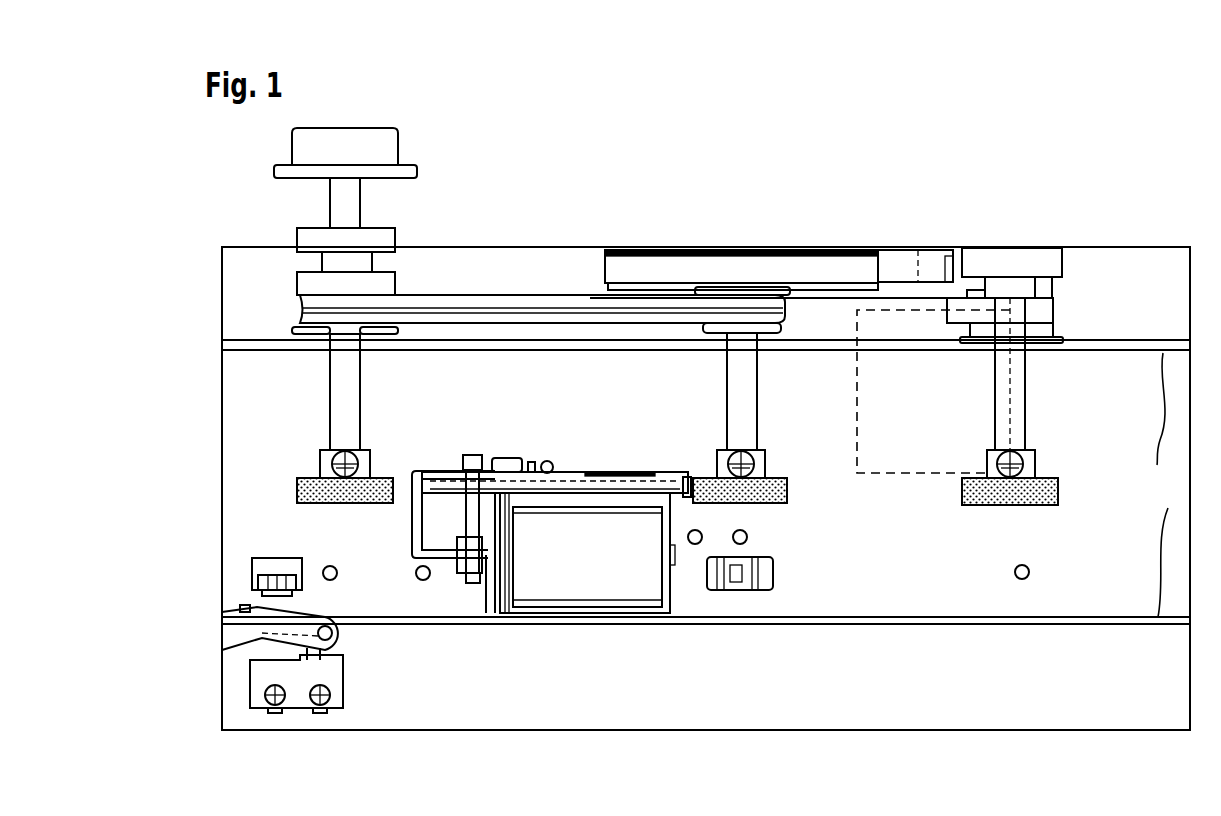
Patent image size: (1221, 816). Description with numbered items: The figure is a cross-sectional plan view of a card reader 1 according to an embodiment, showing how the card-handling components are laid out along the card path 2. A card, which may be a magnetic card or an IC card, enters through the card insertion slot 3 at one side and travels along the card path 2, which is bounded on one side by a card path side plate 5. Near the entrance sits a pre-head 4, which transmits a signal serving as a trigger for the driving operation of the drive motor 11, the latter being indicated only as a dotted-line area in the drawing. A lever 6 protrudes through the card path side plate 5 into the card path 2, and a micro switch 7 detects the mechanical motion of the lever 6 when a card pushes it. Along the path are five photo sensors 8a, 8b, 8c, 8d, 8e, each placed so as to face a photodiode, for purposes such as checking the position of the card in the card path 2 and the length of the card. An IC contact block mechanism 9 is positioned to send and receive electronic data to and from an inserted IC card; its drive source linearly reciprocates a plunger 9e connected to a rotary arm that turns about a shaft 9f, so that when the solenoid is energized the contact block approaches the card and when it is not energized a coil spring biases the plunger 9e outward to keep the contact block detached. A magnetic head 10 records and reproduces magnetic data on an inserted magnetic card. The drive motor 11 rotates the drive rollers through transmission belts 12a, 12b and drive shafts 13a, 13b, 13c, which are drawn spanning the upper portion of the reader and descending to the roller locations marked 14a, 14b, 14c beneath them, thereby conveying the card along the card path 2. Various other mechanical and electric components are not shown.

The card reader 1 is at (1099, 182).
The card path 2 is at (266, 395).
The card insertion slot 3 is at (198, 495).
The pre-head 4 is at (270, 575).
The card path side plate 5 is at (1167, 485).
The lever 6 is at (340, 640).
The micro switch 7 is at (343, 688).
The photo sensor 8a is at (335, 567).
The photo sensor 8b is at (417, 578).
The photo sensor 8c is at (693, 530).
The photo sensor 8d is at (747, 534).
The photo sensor 8e is at (1027, 577).
The IC contact block mechanism 9 is at (627, 580).
The plunger 9e is at (490, 575).
The shaft 9f is at (472, 455).
The magnetic head 10 is at (775, 590).
The drive motor 11 is at (942, 418).
The transmission belt 12a is at (440, 305).
The transmission belt 12b is at (680, 268).
The drive shaft 13a is at (355, 380).
The drive shaft 13b is at (750, 408).
The drive shaft 13c is at (1015, 410).
The pad 14a is at (393, 480).
The pad 14b is at (787, 490).
The pad 14c is at (1058, 490).